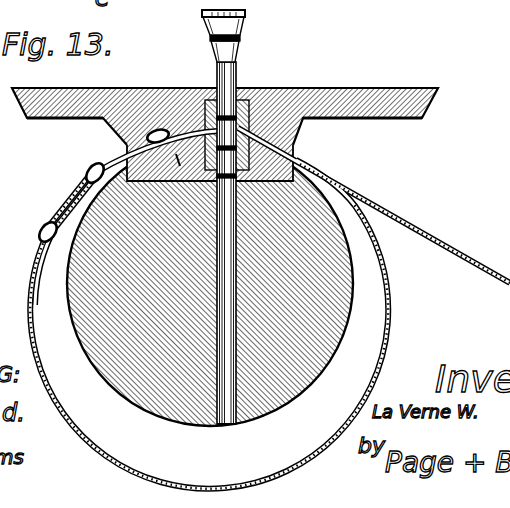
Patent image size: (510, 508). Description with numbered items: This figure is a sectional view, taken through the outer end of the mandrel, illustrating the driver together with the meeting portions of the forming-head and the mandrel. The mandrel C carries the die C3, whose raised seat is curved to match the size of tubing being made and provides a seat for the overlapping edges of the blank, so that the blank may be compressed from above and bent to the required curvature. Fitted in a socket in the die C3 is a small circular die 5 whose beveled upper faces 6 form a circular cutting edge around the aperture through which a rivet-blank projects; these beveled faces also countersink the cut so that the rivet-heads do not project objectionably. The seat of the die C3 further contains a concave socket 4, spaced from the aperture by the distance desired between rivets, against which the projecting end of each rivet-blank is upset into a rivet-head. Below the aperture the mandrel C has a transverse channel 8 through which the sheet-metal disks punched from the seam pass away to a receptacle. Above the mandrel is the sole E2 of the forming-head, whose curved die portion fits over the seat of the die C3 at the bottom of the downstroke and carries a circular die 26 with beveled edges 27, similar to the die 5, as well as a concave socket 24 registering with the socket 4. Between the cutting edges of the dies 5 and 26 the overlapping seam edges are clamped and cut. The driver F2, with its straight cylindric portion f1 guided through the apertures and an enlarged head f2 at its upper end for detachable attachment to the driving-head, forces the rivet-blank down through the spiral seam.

The mandrel C is at (150, 340).
The circular die 5 is at (225, 136).
The sole of the forming-head E2 is at (225, 128).
The beveled upper faces 6 is at (188, 182).
The circular die 26 is at (233, 115).
The beveled edges 27 is at (256, 100).
The die C3 is at (120, 155).
The concave socket 24 is at (157, 132).
The concave socket 4 is at (175, 161).
The straight cylindric portion f1 is at (261, 243).
The transverse bore or channel 8 is at (245, 405).
The driver F2 is at (224, 36).
The enlarged head f2 is at (192, 47).